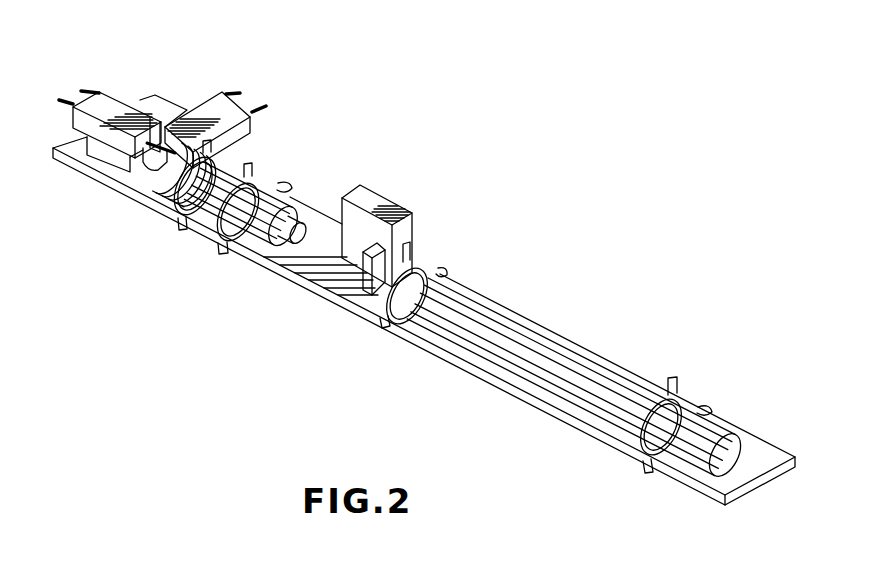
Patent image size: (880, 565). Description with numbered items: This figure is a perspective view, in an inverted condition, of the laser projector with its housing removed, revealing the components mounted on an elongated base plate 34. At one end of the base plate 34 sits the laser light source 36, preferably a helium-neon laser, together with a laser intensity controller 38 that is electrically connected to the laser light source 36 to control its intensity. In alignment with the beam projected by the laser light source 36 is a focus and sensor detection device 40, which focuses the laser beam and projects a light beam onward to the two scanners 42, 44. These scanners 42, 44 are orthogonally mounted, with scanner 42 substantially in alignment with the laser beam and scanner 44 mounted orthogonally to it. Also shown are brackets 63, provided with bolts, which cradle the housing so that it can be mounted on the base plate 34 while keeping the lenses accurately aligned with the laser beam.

The base plate 34 is at (319, 304).
The laser light source 36 is at (490, 347).
The laser intensity controller 38 is at (407, 227).
The focus and sensor detection device 40 is at (240, 245).
The scanner 42 is at (122, 110).
The scanner 44 is at (207, 115).
The brackets 63 is at (248, 156).